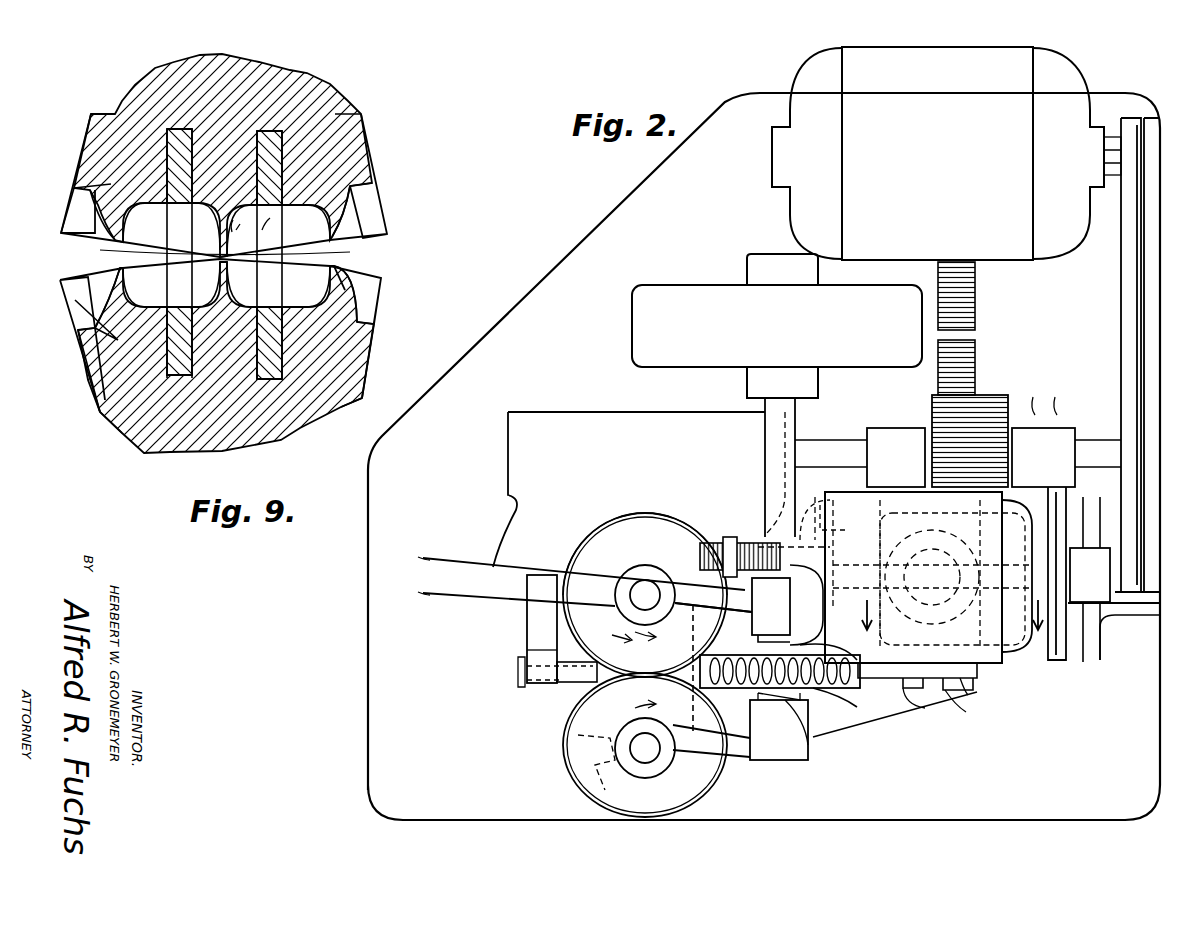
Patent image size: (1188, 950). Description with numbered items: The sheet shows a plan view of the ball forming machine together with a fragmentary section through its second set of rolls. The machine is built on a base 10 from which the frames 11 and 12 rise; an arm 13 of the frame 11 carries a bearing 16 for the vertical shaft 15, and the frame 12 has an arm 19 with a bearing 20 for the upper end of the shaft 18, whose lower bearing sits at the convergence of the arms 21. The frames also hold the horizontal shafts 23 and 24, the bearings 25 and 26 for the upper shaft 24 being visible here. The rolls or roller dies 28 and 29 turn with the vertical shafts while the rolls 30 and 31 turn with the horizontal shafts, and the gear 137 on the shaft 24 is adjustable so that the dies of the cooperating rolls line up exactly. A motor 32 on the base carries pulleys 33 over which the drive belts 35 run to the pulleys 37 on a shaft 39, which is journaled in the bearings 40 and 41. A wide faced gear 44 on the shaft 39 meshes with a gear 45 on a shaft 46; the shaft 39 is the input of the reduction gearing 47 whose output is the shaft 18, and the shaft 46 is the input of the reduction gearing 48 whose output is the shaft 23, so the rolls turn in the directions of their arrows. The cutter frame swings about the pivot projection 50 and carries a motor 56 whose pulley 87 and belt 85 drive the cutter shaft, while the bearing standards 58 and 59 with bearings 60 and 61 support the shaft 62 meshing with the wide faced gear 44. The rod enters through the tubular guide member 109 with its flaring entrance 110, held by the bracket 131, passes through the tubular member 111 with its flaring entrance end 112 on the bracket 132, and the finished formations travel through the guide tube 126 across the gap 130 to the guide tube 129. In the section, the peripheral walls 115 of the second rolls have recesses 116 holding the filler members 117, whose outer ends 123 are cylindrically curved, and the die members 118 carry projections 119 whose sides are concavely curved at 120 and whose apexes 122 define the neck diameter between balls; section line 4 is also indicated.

In FIG. 2, the base 10 is at (372, 705).
In FIG. 2, the frame 11 is at (608, 778).
In FIG. 2, the frame 12 is at (468, 578).
In FIG. 2, the arm 13 is at (705, 750).
In FIG. 2, the vertical shaft 15 is at (655, 770).
In FIG. 2, the bearing 16 is at (635, 735).
In FIG. 2, the shaft 18 is at (648, 590).
In FIG. 2, the arm 19 is at (705, 598).
In FIG. 2, the bearing 20 is at (608, 545).
In FIG. 2, the arms 21 is at (575, 575).
In FIG. 2, the horizontal shaft 23 is at (782, 437).
In FIG. 2, the horizontal shaft 24 is at (800, 740).
In FIG. 2, the bearing 25 is at (778, 750).
In FIG. 2, the bearing 26 is at (775, 628).
In FIG. 2, the roll or roller die 28 is at (568, 750).
In FIG. 2, the roll or roller die 29 is at (632, 655).
In FIG. 9, the roll or roller die 30 is at (250, 428).
In FIG. 9, the roll or roller die 31 is at (300, 62).
In FIG. 2, the roll or roller die 31 is at (850, 732).
In FIG. 2, the motor 32 is at (815, 100).
In FIG. 2, the pulleys 33 is at (1121, 160).
In FIG. 2, the drive belts 35 is at (1140, 300).
In FIG. 2, the pulleys 37 is at (1157, 372).
In FIG. 2, the shaft 39 is at (822, 460).
In FIG. 2, the bearing 40 is at (1028, 448).
In FIG. 2, the bearing 41 is at (895, 445).
In FIG. 2, the wide faced gear 44 is at (980, 410).
In FIG. 2, the gear 45 is at (962, 346).
In FIG. 2, the shaft 46 is at (950, 328).
In FIG. 2, the reduction gearing 47 is at (680, 430).
In FIG. 2, the reduction gearing 48 is at (700, 292).
In FIG. 2, the pivot projection 50 is at (932, 615).
In FIG. 2, the motor 56 is at (968, 660).
In FIG. 2, the bearing standard 58 is at (1088, 602).
In FIG. 2, the bearing standard 59 is at (818, 505).
In FIG. 2, the bearing 60 is at (1098, 600).
In FIG. 2, the bearing 61 is at (838, 545).
In FIG. 2, the shaft 62 is at (925, 570).
In FIG. 2, the belt 85 is at (1062, 495).
In FIG. 2, the pulley 87 is at (1075, 525).
In FIG. 2, the tubular guide member 109 is at (619, 631).
In FIG. 2, the flaring entrance 110 is at (510, 692).
In FIG. 2, the tubular member 111 is at (700, 656).
In FIG. 2, the flaring entrance end 112 is at (661, 699).
In FIG. 9, the peripheral walls 115 is at (90, 105).
In FIG. 9, the recesses 116 is at (96, 406).
In FIG. 9, the filler members 117 is at (165, 108).
In FIG. 9, the die members 118 is at (118, 338).
In FIG. 9, the projections 119 is at (112, 256).
In FIG. 9, the concave curvature 120 is at (95, 216).
In FIG. 9, the apexes 122 is at (239, 233).
In FIG. 9, the outer ends 123 is at (396, 320).
In FIG. 2, the guide tube 126 is at (929, 704).
In FIG. 2, the guide tube 129 is at (979, 690).
In FIG. 2, the gap 130 is at (970, 707).
In FIG. 2, the bracket 131 is at (530, 625).
In FIG. 2, the bracket 132 is at (700, 645).
In FIG. 2, the gear 137 is at (758, 555).
In FIG. 2, the section line 4- 4 is at (951, 630).